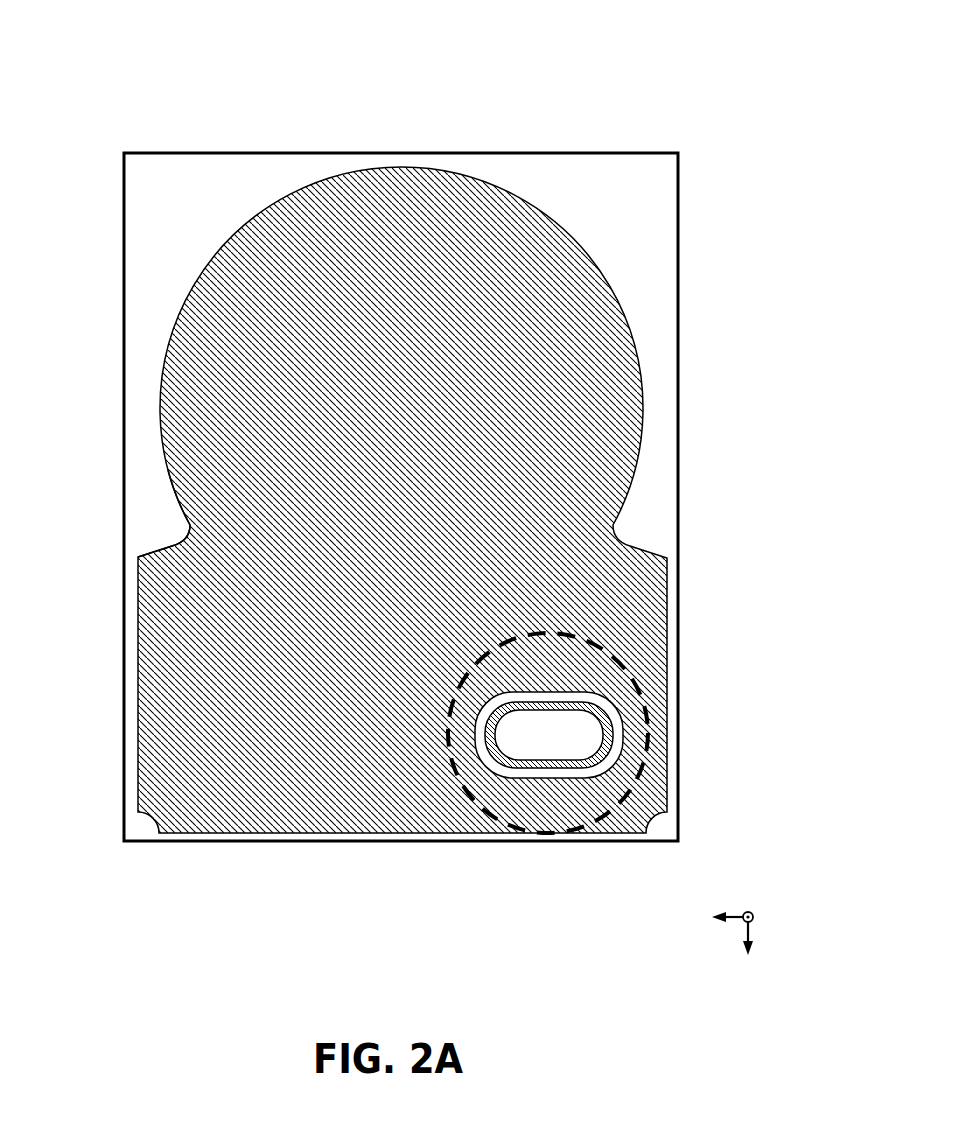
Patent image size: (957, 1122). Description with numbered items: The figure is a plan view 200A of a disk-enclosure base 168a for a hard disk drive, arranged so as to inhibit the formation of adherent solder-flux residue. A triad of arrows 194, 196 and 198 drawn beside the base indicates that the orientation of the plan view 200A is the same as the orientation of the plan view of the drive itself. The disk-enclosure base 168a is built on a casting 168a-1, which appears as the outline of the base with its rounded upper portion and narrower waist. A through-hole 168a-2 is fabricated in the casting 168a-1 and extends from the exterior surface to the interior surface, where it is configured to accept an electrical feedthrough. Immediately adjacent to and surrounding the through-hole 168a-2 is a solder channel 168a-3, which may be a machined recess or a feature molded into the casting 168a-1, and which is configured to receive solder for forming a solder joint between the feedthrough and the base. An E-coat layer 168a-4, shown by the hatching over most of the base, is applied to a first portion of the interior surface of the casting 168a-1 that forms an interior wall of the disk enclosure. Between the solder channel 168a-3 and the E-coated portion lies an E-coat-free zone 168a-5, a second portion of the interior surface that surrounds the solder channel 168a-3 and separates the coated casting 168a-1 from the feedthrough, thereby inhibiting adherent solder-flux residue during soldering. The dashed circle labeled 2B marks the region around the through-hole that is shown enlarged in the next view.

The plan view 200A is at (112, 71).
The disk-enclosure base 168a is at (632, 145).
The casting 168a-1 is at (152, 501).
The through-hole 168a-2 is at (532, 748).
The solder channel 168a-3 is at (547, 765).
The E-coat layer 168a-4 is at (380, 630).
The E-coat-free zone 168a-5 is at (572, 773).
The detail region 2B is at (610, 660).
The arrow 194 is at (733, 912).
The arrow 196 is at (752, 925).
The arrow 198 is at (758, 914).